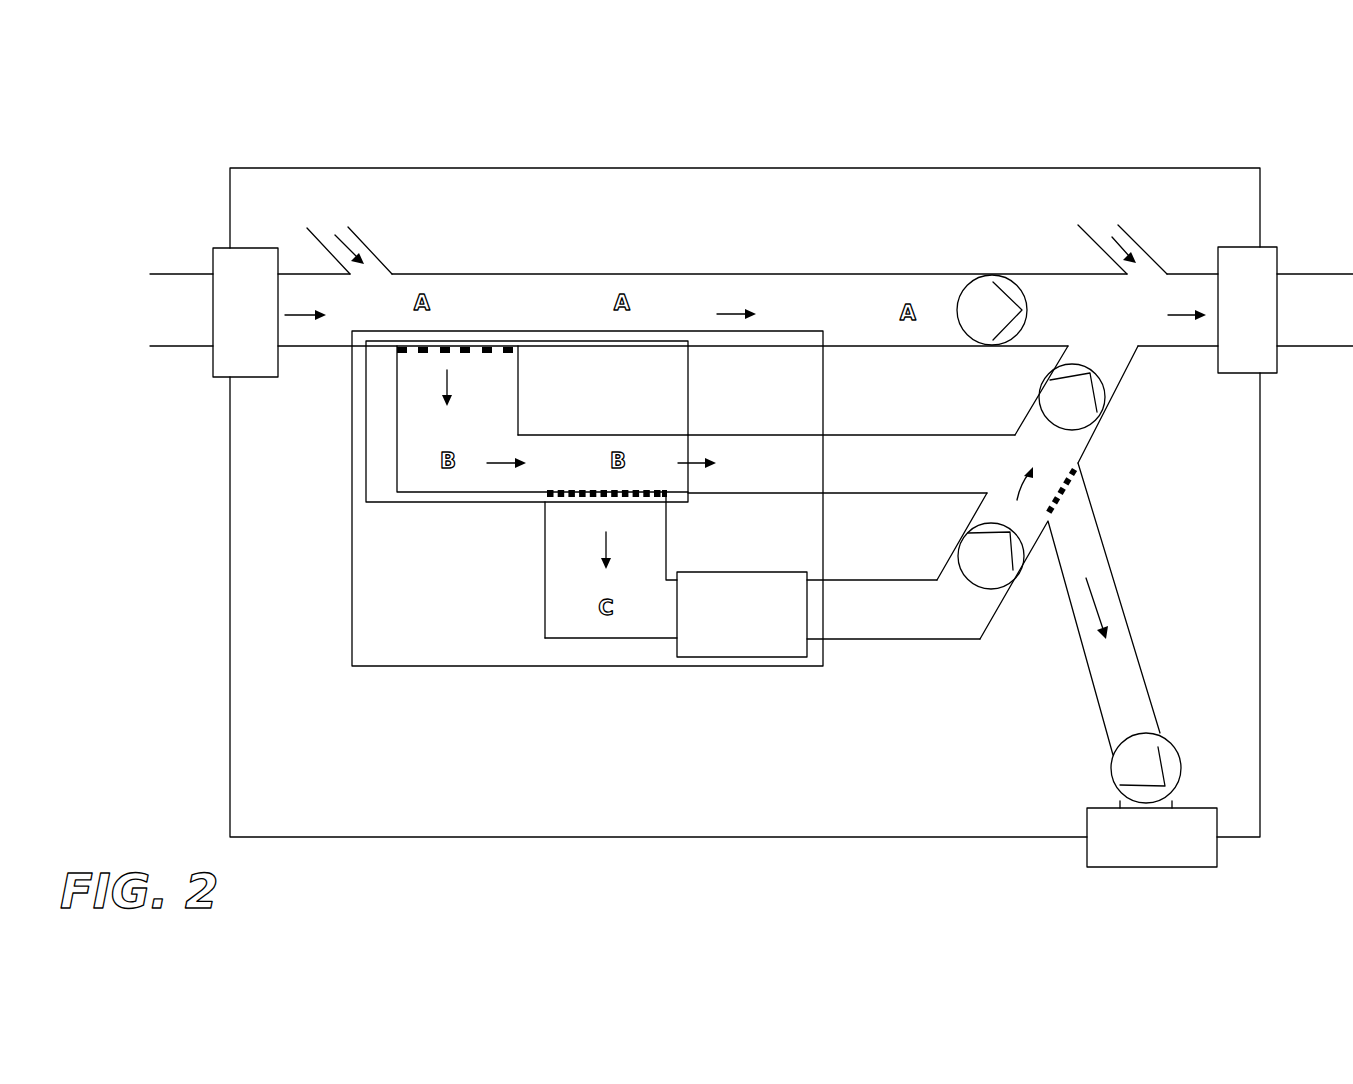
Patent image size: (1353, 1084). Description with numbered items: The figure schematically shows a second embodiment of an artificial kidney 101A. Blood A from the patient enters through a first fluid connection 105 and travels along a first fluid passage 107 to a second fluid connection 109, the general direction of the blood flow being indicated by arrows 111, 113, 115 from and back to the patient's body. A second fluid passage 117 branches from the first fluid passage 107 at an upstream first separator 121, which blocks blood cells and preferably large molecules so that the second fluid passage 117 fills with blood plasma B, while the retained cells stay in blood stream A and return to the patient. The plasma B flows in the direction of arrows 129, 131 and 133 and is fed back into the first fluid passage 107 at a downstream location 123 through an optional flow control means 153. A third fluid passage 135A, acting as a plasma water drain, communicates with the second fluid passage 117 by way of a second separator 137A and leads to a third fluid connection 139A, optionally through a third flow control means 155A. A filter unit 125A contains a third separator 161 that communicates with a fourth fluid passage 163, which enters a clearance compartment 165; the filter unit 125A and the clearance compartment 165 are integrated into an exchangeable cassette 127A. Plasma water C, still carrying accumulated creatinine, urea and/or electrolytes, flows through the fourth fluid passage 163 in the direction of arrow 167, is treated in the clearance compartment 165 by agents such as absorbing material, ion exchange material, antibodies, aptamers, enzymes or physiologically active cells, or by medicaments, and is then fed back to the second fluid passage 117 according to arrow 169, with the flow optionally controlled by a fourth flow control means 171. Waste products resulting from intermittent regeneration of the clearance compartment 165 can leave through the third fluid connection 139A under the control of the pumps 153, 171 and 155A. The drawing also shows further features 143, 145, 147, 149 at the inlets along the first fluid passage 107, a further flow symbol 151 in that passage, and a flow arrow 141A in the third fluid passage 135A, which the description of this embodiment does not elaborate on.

The artificial kidney 101A is at (186, 89).
The first fluid connection 105 is at (245, 312).
The first fluid passage 107 is at (457, 292).
The second fluid connection 109 is at (1247, 310).
The arrow 111 is at (297, 308).
The arrow 113 is at (737, 310).
The arrow 115 is at (1183, 312).
The second fluid passage 117 is at (767, 457).
The first separator 121 is at (420, 352).
The downstream location 123 is at (1098, 357).
The filter unit 125A is at (380, 483).
The exchangeable cassette 127A is at (375, 650).
The arrow 129 is at (440, 388).
The arrow 131 is at (487, 465).
The arrow 133 is at (697, 462).
The third fluid passage 135A is at (1135, 688).
The second separator 137A is at (1085, 480).
The third fluid connection 139A is at (1152, 834).
The flow direction 141A is at (1097, 600).
The inlet 143 is at (330, 228).
The inlet flow 145 is at (363, 233).
The inlet 147 is at (1105, 230).
The inlet flow 149 is at (1121, 240).
The pump 151 is at (980, 302).
The flow control means 153 is at (1050, 400).
The third flow control means 155A is at (1158, 747).
The third separator 161 is at (557, 513).
The fourth fluid passage 163 is at (603, 622).
The clearance compartment 165 is at (828, 614).
The arrow 167 is at (603, 548).
The arrow 169 is at (1062, 492).
The fourth flow control means 171 is at (975, 577).